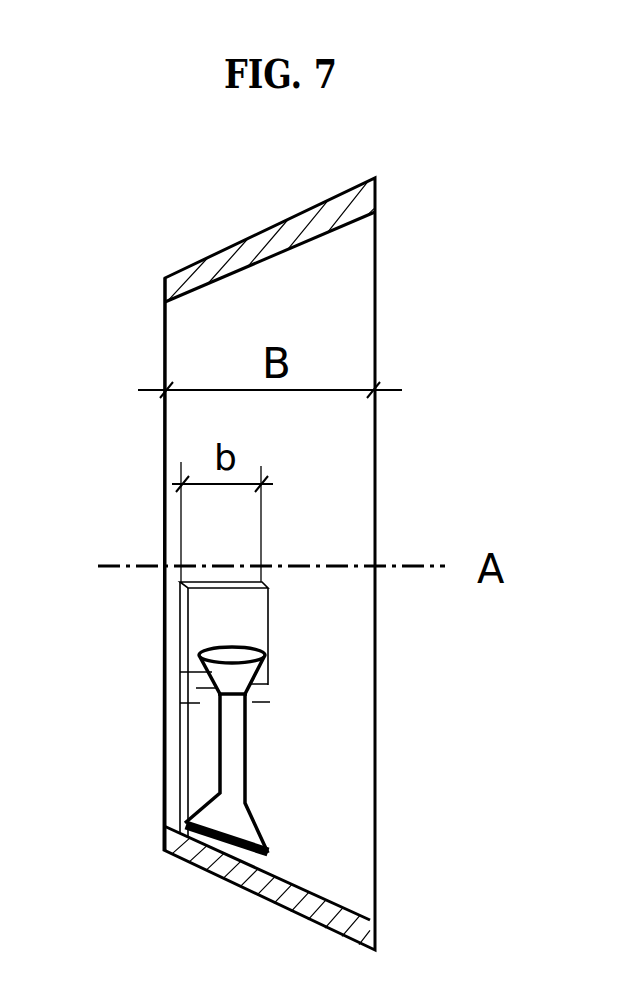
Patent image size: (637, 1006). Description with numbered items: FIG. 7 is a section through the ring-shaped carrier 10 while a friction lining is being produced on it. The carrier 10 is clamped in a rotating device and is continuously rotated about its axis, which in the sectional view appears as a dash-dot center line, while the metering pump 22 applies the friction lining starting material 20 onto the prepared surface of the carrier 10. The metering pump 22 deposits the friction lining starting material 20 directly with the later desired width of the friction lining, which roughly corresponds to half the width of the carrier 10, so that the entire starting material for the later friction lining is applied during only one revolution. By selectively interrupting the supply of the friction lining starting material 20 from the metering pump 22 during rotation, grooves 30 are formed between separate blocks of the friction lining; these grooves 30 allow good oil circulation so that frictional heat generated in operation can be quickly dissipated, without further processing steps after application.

The carrier 10 is at (257, 248).
The friction lining starting material 20 is at (197, 750).
The metering pump 22 is at (237, 750).
The groove 30 is at (200, 685).